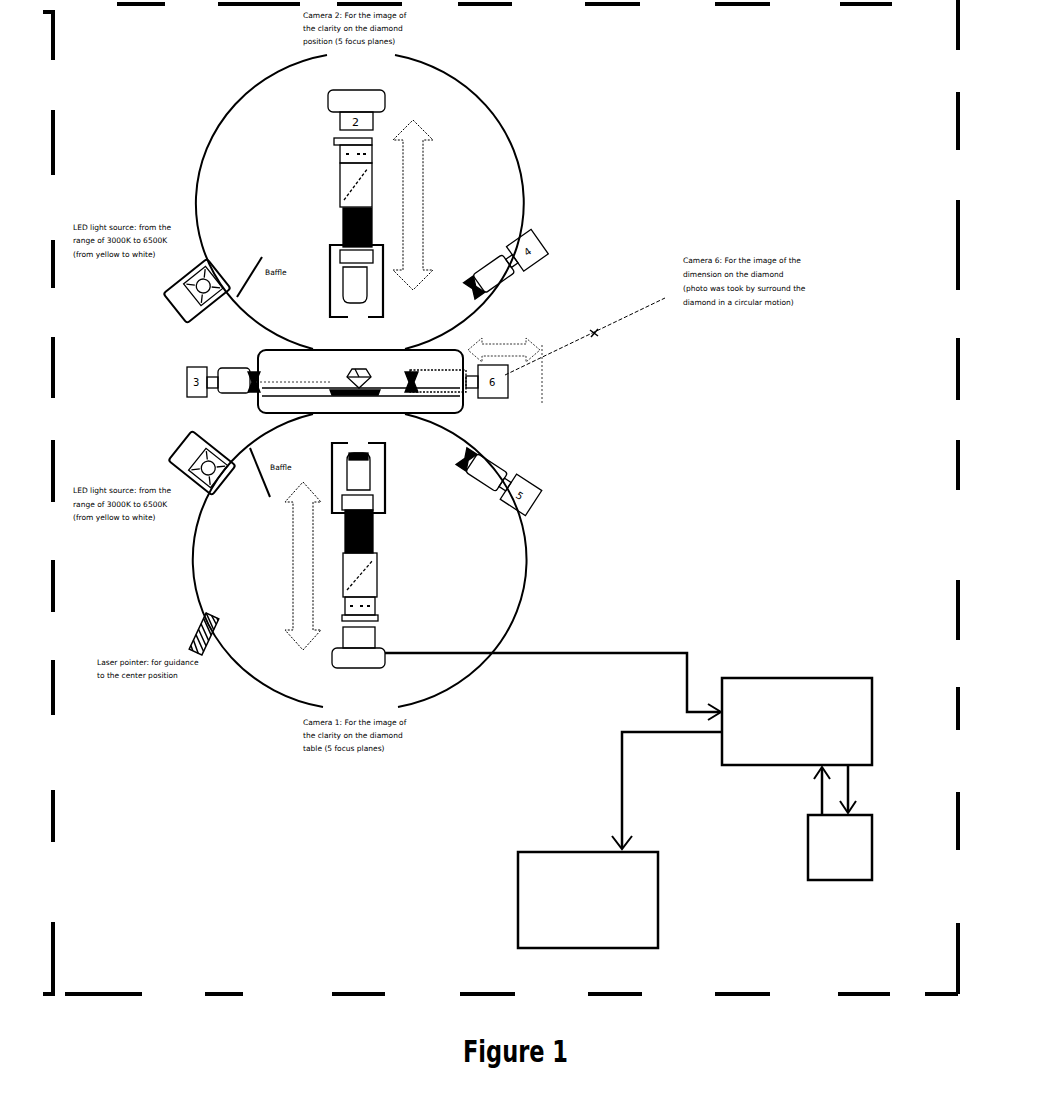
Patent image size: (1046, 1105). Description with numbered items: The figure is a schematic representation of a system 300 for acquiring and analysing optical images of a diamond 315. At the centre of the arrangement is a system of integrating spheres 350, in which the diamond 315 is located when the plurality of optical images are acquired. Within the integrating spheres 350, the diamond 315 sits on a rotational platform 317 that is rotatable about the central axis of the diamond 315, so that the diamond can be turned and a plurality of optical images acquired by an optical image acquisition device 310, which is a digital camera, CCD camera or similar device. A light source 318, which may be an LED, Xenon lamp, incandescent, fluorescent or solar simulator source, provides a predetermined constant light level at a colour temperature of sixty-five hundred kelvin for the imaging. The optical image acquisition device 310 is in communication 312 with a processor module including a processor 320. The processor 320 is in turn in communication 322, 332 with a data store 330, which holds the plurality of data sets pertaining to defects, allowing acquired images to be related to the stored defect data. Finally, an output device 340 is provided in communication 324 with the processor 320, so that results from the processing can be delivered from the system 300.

The system 300 is at (122, 991).
The optical image acquisition device 310 is at (345, 630).
The communication 312 is at (590, 651).
The diamond 315 is at (362, 376).
The rotational platform 317 is at (462, 410).
The light source 318 is at (187, 353).
The processor 320 is at (827, 673).
The communication 322 is at (852, 780).
The communication 324 is at (625, 790).
The data store 330 is at (872, 848).
The communication 332 is at (817, 793).
The output device 340 is at (658, 912).
The system of integrating spheres 350 is at (667, 754).